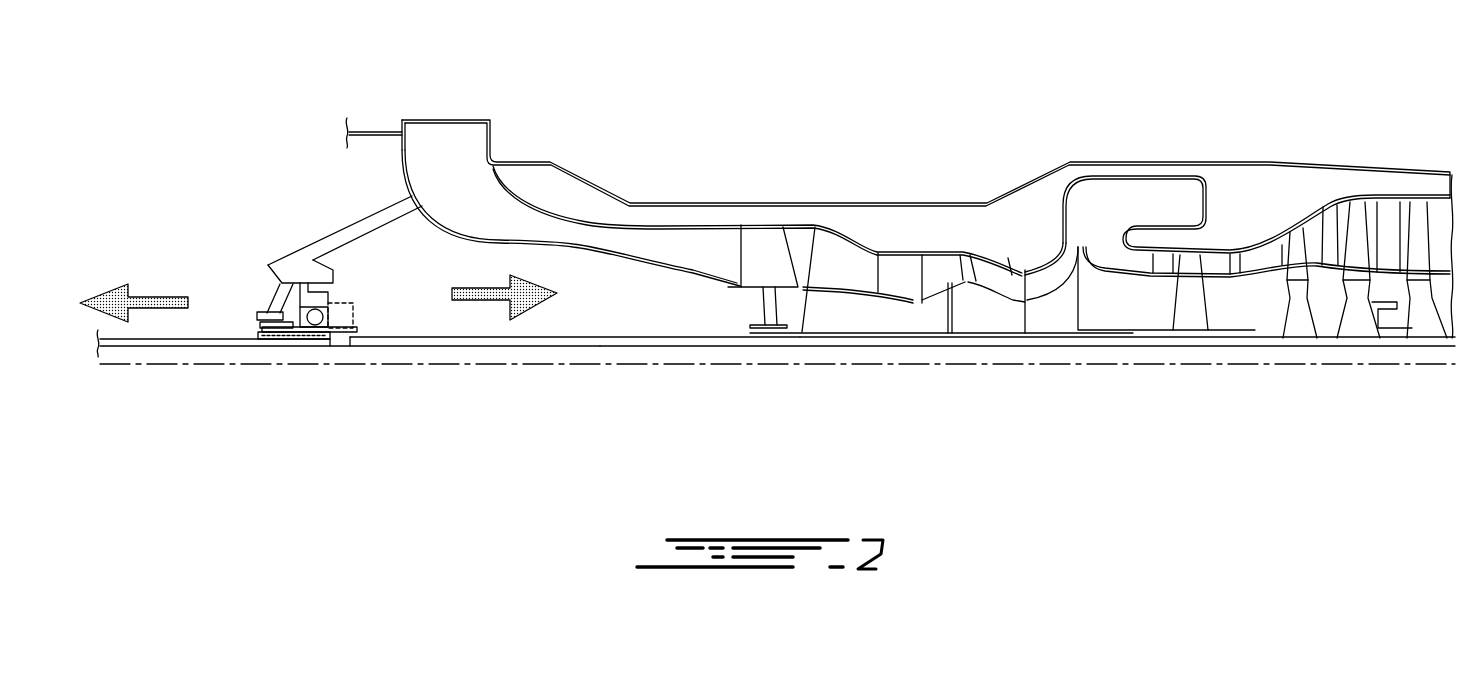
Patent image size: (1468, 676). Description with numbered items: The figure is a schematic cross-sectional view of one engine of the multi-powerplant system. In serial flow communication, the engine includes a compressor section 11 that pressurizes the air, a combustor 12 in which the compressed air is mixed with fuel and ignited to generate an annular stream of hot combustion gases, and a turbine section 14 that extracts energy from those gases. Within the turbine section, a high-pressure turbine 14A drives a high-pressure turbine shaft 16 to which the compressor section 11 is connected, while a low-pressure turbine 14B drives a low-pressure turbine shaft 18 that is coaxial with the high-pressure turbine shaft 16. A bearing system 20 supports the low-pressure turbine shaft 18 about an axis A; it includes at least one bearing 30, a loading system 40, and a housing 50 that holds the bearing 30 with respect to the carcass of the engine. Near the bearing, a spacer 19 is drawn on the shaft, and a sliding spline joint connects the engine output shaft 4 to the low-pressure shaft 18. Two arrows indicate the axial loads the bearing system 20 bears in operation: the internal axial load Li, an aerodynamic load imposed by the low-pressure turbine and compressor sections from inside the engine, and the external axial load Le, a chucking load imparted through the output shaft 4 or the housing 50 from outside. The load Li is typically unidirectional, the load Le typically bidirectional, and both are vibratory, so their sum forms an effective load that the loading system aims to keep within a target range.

The engine output shaft 4 is at (122, 350).
The compressor section 11 is at (947, 216).
The combustor 12 is at (1160, 200).
The turbine section 14 is at (1323, 170).
The high-pressure turbine 14A is at (1188, 303).
The low-pressure turbine 14B is at (1417, 302).
The high-pressure turbine shaft 16 is at (982, 340).
The low-pressure turbine shaft 18 is at (507, 343).
The spacer 19 is at (293, 343).
The bearing system 20 is at (336, 374).
The bearing 30 is at (286, 326).
The loading system 40 is at (366, 321).
The housing 50 is at (353, 289).
The axis A is at (667, 367).
The external axial load Le is at (155, 300).
The internal axial load Li is at (477, 303).